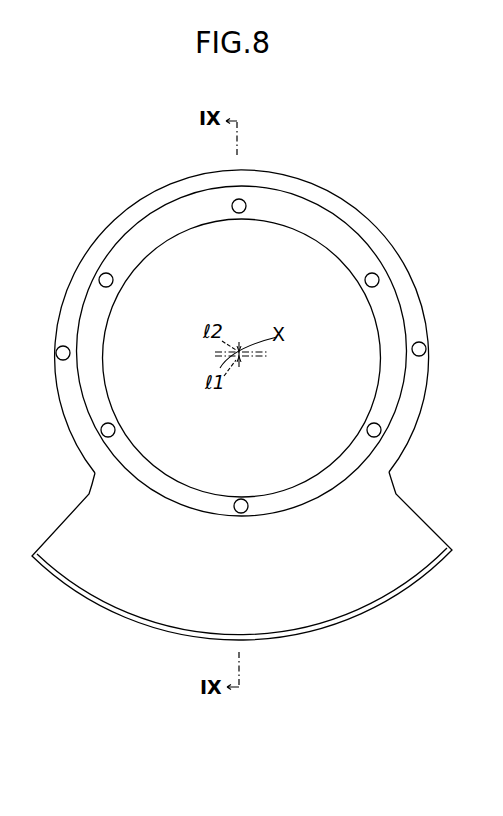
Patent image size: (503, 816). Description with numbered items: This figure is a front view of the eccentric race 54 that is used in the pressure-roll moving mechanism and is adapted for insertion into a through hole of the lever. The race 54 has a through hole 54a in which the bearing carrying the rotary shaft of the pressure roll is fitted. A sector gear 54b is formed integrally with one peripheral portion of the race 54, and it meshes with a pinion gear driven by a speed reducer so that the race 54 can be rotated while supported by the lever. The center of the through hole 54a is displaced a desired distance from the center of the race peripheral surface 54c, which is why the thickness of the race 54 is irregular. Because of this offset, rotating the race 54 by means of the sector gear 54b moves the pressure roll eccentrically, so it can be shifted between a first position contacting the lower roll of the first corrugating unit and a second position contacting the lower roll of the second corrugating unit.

The race 54 is at (143, 205).
The through hole 54a is at (365, 272).
The sector gear 54b is at (367, 598).
The race peripheral surface 54c is at (338, 192).